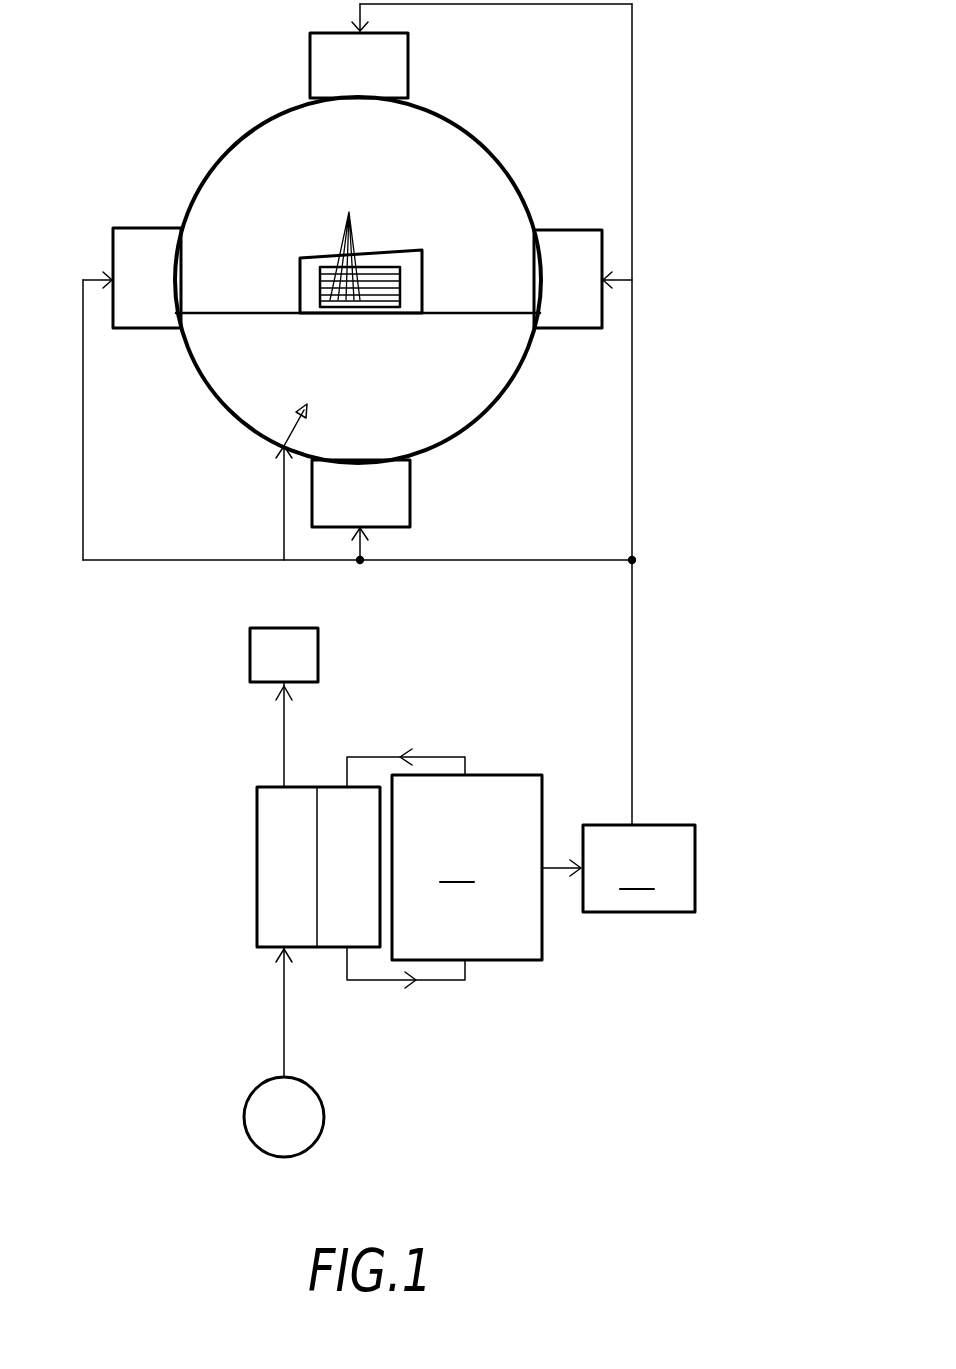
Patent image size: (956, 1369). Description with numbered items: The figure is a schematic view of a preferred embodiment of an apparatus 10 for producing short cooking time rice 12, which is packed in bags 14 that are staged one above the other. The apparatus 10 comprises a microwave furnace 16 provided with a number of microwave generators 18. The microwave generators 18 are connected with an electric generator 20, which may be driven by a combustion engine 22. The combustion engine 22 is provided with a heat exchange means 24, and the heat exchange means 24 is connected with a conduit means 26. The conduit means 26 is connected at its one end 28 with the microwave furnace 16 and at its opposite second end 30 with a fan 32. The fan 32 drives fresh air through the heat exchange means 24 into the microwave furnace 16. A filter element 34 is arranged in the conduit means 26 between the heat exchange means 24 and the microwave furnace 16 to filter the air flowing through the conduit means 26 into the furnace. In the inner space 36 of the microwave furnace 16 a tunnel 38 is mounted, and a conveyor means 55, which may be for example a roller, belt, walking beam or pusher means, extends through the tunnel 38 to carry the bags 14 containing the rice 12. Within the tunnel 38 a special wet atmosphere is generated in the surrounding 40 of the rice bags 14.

The apparatus 10 is at (700, 392).
The rice 12 is at (385, 280).
The bags 14 is at (352, 239).
The microwave furnace 16 is at (493, 152).
The microwave generators 18 is at (410, 67).
The electric generator 20 is at (389, 458).
The combustion engine 22 is at (464, 868).
The heat exchange means 24 is at (254, 887).
The conduit means 26 is at (283, 503).
The one end 28 is at (281, 450).
The second end 30 is at (288, 1074).
The fan 32 is at (244, 1118).
The filter element 34 is at (320, 647).
The inner space 36 is at (296, 199).
The tunnel 38 is at (425, 281).
The surrounding 40 is at (405, 314).
The conveyor means 55 is at (310, 312).